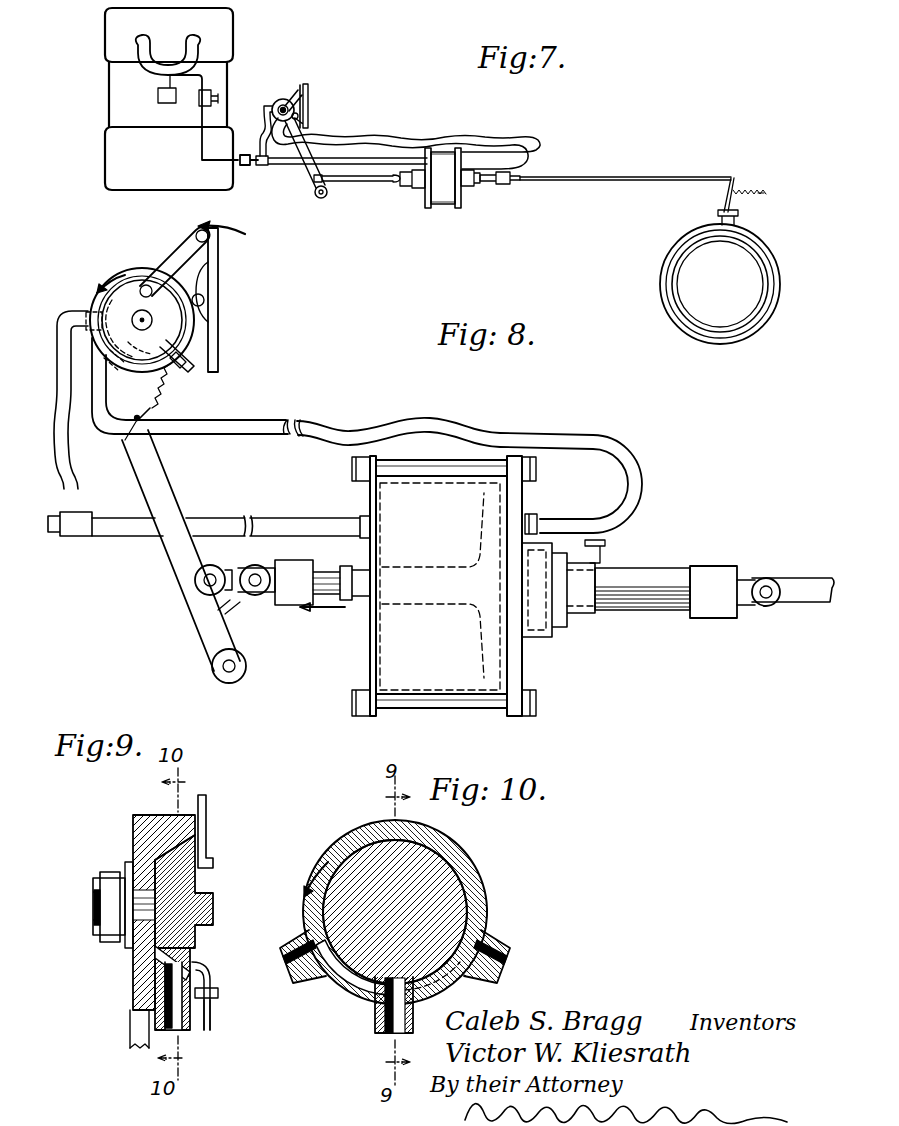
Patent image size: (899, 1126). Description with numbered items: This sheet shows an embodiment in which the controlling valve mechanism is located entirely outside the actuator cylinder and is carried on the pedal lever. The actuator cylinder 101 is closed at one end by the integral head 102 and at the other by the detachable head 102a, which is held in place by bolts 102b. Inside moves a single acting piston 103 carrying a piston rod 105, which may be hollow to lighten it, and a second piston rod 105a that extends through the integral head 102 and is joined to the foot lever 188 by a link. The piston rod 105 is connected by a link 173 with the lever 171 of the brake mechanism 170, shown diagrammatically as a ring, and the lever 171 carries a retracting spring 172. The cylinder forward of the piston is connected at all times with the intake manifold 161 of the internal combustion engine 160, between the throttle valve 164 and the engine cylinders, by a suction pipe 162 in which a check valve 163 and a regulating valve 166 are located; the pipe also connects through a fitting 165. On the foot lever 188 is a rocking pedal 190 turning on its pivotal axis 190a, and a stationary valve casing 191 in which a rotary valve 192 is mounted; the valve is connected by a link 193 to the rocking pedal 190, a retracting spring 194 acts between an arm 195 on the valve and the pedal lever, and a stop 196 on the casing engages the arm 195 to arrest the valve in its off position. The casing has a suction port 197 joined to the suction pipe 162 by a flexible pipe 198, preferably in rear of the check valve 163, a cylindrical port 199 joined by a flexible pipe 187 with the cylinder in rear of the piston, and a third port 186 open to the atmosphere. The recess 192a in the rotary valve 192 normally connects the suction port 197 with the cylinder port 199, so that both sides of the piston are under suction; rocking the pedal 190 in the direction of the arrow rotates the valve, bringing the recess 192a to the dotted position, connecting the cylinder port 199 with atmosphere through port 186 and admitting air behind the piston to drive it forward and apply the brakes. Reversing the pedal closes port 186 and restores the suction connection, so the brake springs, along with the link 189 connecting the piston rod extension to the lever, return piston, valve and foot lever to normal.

In FIG. 7, the actuator cylinder 101 is at (445, 204).
In FIG. 8, the actuator cylinder 101 is at (441, 585).
In FIG. 7, the integral head 102 is at (427, 200).
In FIG. 8, the integral head 102 is at (372, 640).
In FIG. 7, the detachable head 102a is at (468, 192).
In FIG. 8, the detachable head 102a is at (515, 664).
In FIG. 8, the bolts 102b is at (438, 704).
In FIG. 8, the single acting piston 103 is at (480, 630).
In FIG. 7, the piston rod 105 is at (490, 178).
In FIG. 8, the piston rod 105 is at (625, 580).
In FIG. 8, the second piston rod 105a is at (322, 572).
In FIG. 7, the internal combustion engine 160 is at (112, 86).
In FIG. 7, the intake manifold 161 is at (190, 52).
In FIG. 7, the suction pipe 162 is at (352, 165).
In FIG. 8, the suction pipe 162 is at (247, 526).
In FIG. 7, the check valve 163 is at (247, 168).
In FIG. 7, the throttle valve 164 is at (160, 90).
In FIG. 7, the supply pipe 165 is at (167, 102).
In FIG. 7, the regulating valve 166 is at (212, 93).
In FIG. 7, the brake mechanism 170 is at (742, 262).
In FIG. 7, the lever 171 is at (720, 204).
In FIG. 7, the retracting spring 172 is at (749, 192).
In FIG. 7, the link 173 is at (590, 180).
In FIG. 8, the link 173 is at (792, 592).
In FIG. 8, the third port 186 is at (154, 392).
In FIG. 10, the third port 186 is at (492, 948).
In FIG. 7, the flexible pipe 187 is at (366, 138).
In FIG. 8, the flexible pipe 187 is at (295, 440).
In FIG. 7, the foot lever 188 is at (310, 175).
In FIG. 8, the foot lever 188 is at (172, 500).
In FIG. 7, the link 189 is at (376, 184).
In FIG. 8, the link 189 is at (240, 600).
In FIG. 7, the rocking pedal 190 is at (309, 103).
In FIG. 8, the rocking pedal 190 is at (219, 297).
In FIG. 8, the pivotal axis 190a is at (204, 296).
In FIG. 7, the valve casing 191 is at (275, 104).
In FIG. 8, the valve casing 191 is at (105, 290).
In FIG. 9, the valve casing 191 is at (133, 830).
In FIG. 10, the valve casing 191 is at (462, 858).
In FIG. 7, the rotary valve 192 is at (287, 100).
In FIG. 8, the rotary valve 192 is at (170, 318).
In FIG. 9, the rotary valve 192 is at (200, 890).
In FIG. 10, the rotary valve 192 is at (440, 906).
In FIG. 8, the recess 192a is at (112, 360).
In FIG. 9, the recess 192a is at (190, 955).
In FIG. 10, the recess 192a is at (352, 970).
In FIG. 7, the link 193 is at (305, 92).
In FIG. 8, the link 193 is at (190, 246).
In FIG. 9, the link 193 is at (204, 822).
In FIG. 8, the retracting spring 194 is at (158, 400).
In FIG. 9, the retracting spring 194 is at (222, 1022).
In FIG. 8, the arm 195 is at (190, 360).
In FIG. 9, the arm 195 is at (212, 1000).
In FIG. 8, the stop 196 is at (184, 350).
In FIG. 9, the stop 196 is at (213, 990).
In FIG. 8, the suction port 197 is at (90, 312).
In FIG. 10, the suction port 197 is at (292, 948).
In FIG. 7, the flexible pipe 198 is at (262, 120).
In FIG. 8, the flexible pipe 198 is at (70, 476).
In FIG. 8, the cylindrical port 199 is at (108, 360).
In FIG. 9, the cylindrical port 199 is at (178, 1024).
In FIG. 10, the cylindrical port 199 is at (376, 1020).